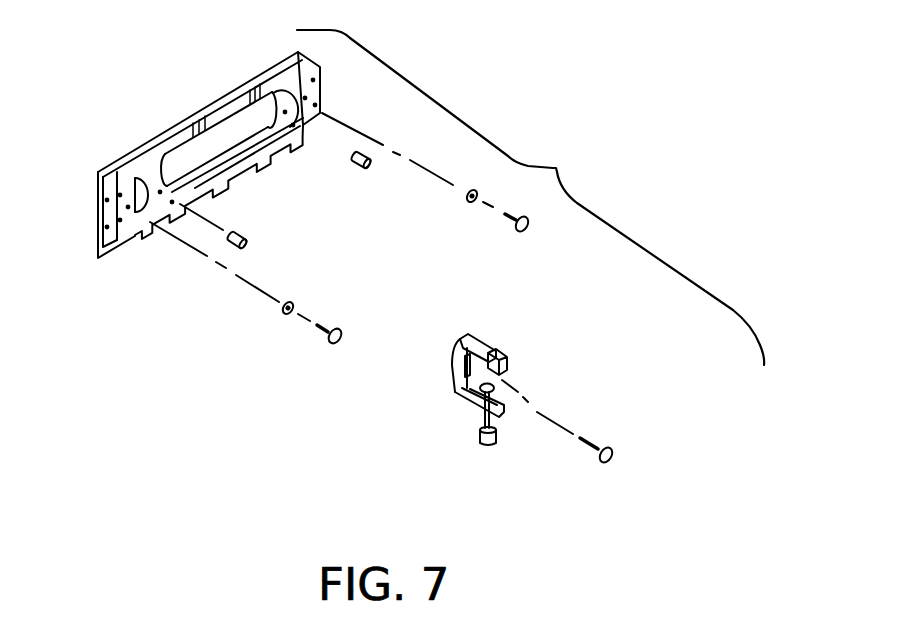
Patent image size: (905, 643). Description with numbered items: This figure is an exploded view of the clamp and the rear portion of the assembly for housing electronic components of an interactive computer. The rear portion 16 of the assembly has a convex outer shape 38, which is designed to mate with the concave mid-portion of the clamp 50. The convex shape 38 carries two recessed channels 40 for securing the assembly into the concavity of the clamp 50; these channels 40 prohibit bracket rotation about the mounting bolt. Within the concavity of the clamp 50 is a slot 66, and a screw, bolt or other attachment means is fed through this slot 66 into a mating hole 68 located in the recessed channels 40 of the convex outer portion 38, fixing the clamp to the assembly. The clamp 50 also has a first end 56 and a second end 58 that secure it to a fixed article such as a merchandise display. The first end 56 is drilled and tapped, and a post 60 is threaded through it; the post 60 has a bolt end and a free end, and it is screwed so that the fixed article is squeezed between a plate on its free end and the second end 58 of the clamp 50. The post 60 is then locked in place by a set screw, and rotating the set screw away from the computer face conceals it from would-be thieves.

The rear portion 16 is at (130, 235).
The convex outer shape 38 is at (220, 133).
The recessed channels 40 is at (152, 178).
The mating hole 68 is at (163, 193).
The clamp 50 is at (488, 336).
The slot 66 is at (464, 362).
The second end 58 is at (508, 376).
The first end 56 is at (481, 408).
The post 60 is at (497, 424).